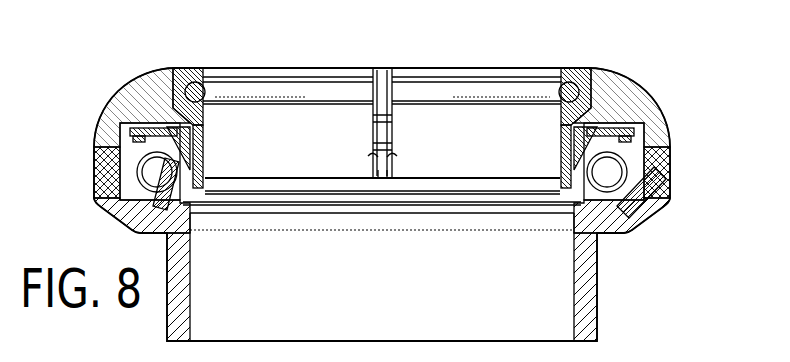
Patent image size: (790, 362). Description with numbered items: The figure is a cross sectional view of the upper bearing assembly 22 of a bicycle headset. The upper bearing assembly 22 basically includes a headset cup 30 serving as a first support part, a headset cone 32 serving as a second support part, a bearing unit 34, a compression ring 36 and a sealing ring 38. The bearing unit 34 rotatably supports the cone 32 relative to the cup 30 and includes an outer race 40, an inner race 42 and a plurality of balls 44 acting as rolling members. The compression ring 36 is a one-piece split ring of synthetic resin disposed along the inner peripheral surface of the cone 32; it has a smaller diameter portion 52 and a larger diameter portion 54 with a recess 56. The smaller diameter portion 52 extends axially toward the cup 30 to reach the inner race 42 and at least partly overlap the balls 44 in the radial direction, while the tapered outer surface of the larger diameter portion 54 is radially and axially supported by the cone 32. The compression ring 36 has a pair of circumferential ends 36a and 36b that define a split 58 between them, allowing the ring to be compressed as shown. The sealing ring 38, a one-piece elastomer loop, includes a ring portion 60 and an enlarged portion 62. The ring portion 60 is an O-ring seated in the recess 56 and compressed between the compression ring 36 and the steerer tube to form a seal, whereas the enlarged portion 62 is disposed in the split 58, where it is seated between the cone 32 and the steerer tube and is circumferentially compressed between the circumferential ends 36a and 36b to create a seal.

The upper bearing assembly 22 is at (685, 102).
The headset cup 30 is at (601, 317).
The headset cone 32 is at (633, 72).
The bearing unit 34 is at (650, 168).
The compression ring 36 is at (575, 68).
The circumferential end 36a is at (378, 157).
The circumferential end 36b is at (392, 156).
The sealing ring 38 is at (434, 68).
The outer race 40 is at (633, 198).
The inner race 42 is at (562, 170).
The balls 44 is at (607, 172).
The smaller diameter portion 52 is at (197, 158).
The larger diameter portion 54 is at (187, 72).
The recess 56 is at (205, 92).
The split 58 is at (383, 183).
The ring portion 60 is at (343, 93).
The enlarged portion 62 is at (381, 80).